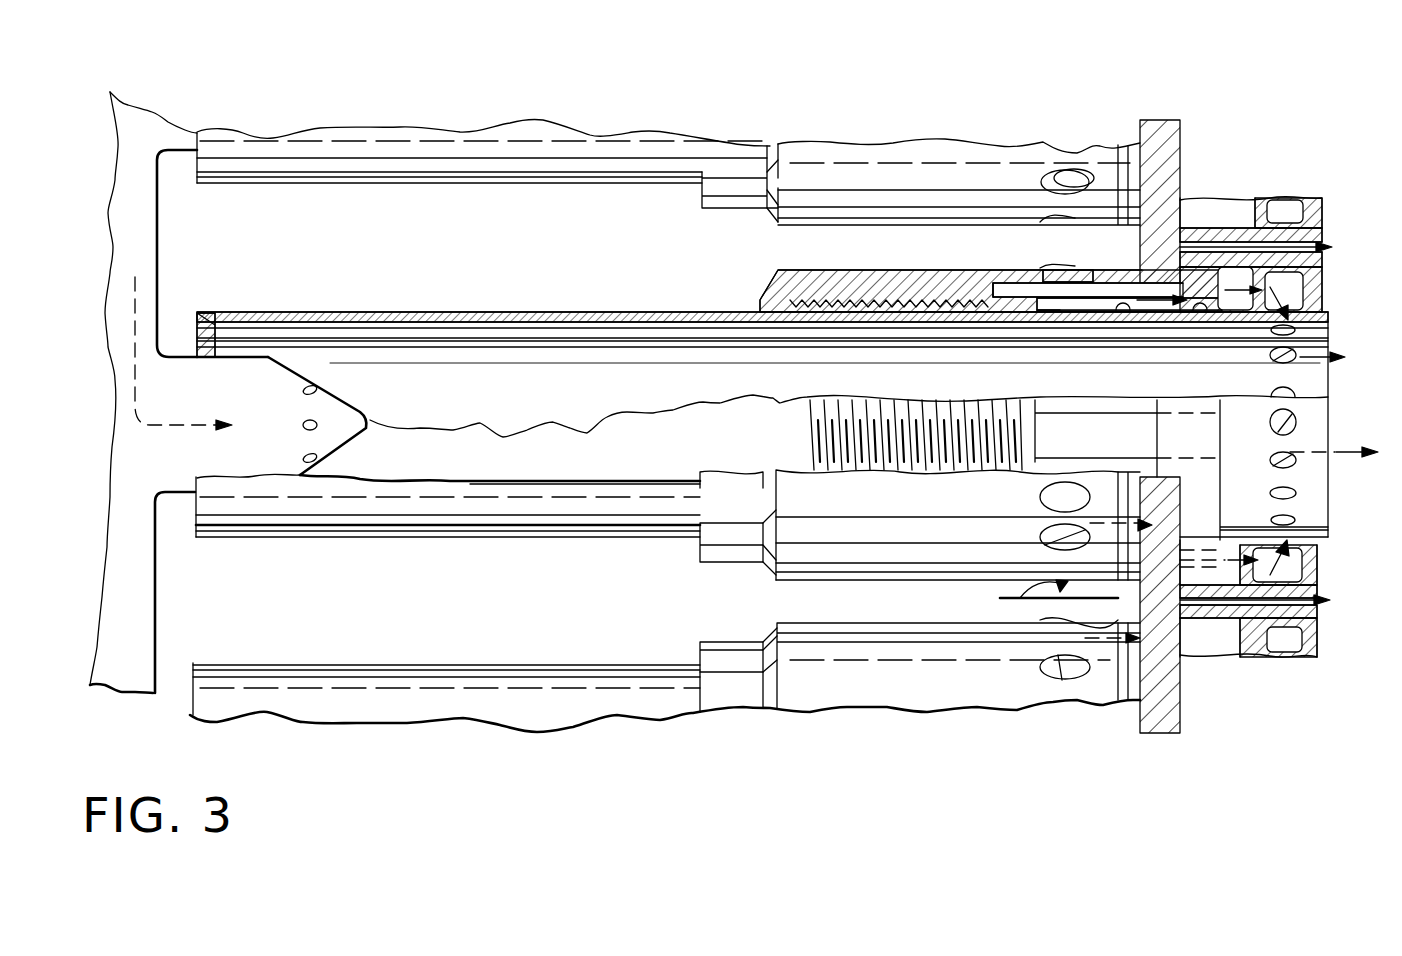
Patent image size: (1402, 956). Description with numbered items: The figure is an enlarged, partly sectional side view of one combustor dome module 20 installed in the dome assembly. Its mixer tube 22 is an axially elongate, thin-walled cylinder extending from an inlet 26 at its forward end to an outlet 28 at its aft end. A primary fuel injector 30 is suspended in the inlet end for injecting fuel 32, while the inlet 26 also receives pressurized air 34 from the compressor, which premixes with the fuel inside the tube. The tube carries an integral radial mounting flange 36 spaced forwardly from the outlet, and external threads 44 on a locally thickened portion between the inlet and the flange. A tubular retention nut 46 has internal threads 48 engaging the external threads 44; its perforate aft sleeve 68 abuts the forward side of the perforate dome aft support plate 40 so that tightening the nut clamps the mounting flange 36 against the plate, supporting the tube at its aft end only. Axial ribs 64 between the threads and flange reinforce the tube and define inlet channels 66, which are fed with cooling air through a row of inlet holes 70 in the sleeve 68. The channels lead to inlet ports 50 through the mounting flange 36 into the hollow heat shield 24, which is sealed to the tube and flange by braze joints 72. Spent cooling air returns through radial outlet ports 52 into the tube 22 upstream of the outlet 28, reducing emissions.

The dome module 20 is at (617, 561).
The mixer tube 22 is at (500, 310).
The heat shield 24 is at (1290, 427).
The inlet 26 is at (196, 518).
The outlet 28 is at (1328, 340).
The fuel injector 30 is at (370, 420).
The fuel 32 is at (355, 383).
The pressurized air 34 is at (200, 336).
The mounting flange 36 is at (1200, 470).
The dome aft support plate 40 is at (1180, 160).
The external threads 44 is at (960, 410).
The retention nut 46 is at (918, 530).
The internal threads 48 is at (828, 320).
The inlet ports 50 is at (1200, 298).
The outlet ports 52 is at (1290, 422).
The axial ribs 64 is at (1052, 300).
The inlet channels 66 is at (1120, 300).
The aft sleeve 68 is at (998, 683).
The inlet holes 70 is at (1048, 184).
The braze joints 72 is at (1205, 290).